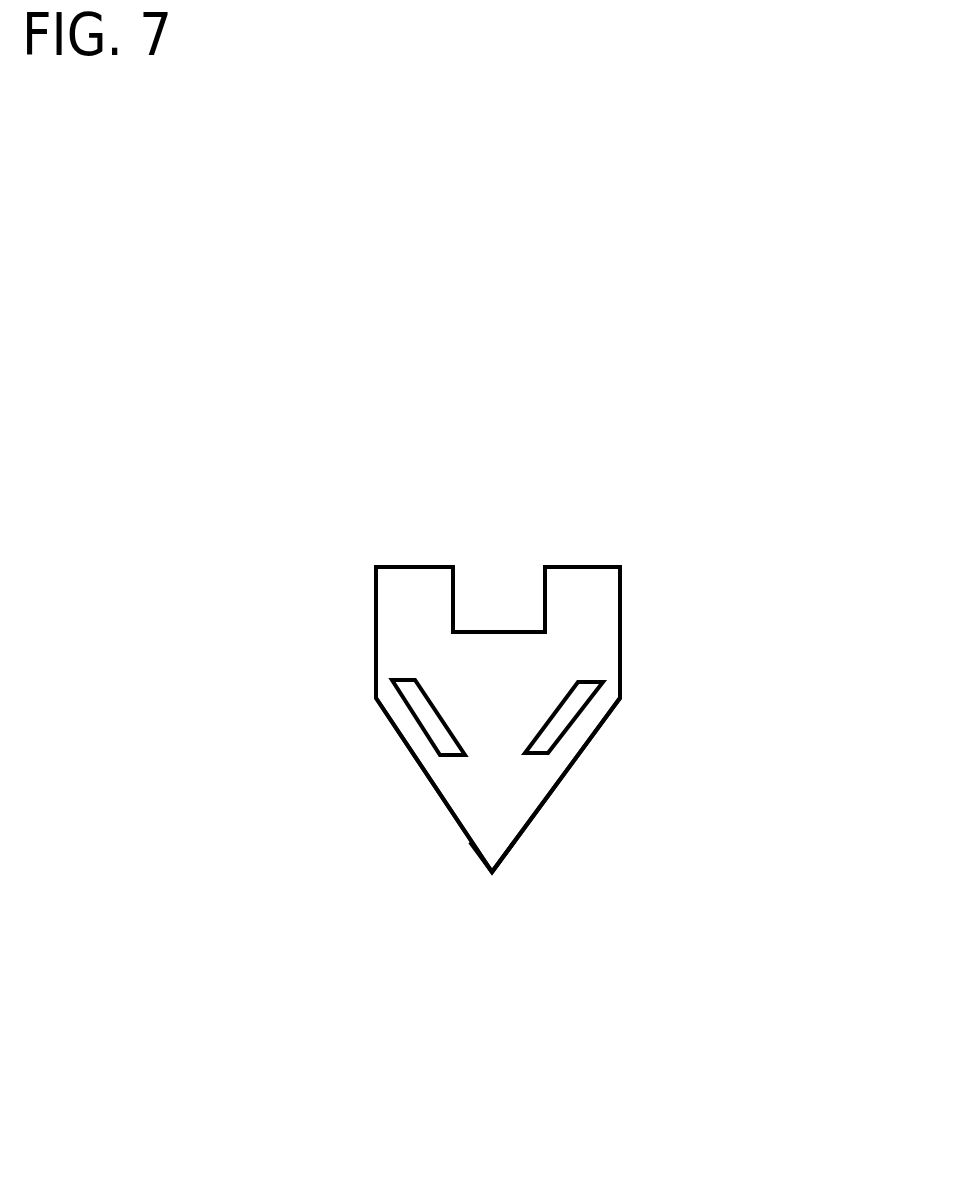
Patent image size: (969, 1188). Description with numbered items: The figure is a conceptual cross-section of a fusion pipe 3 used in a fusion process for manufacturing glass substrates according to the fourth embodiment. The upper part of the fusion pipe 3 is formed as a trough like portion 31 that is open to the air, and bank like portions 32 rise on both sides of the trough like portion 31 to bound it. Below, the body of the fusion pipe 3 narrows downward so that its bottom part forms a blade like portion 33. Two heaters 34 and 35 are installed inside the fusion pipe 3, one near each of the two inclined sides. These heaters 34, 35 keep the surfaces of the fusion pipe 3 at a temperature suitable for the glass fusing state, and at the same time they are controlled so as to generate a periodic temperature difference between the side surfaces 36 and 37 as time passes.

The fusion pipe 3 is at (837, 555).
The trough like portion 31 is at (545, 597).
The bank like portions 32 is at (417, 567).
The blade like portion 33 is at (495, 873).
The heater 34 is at (563, 717).
The heater 35 is at (420, 718).
The side surface 36 is at (543, 807).
The side surface 37 is at (440, 805).